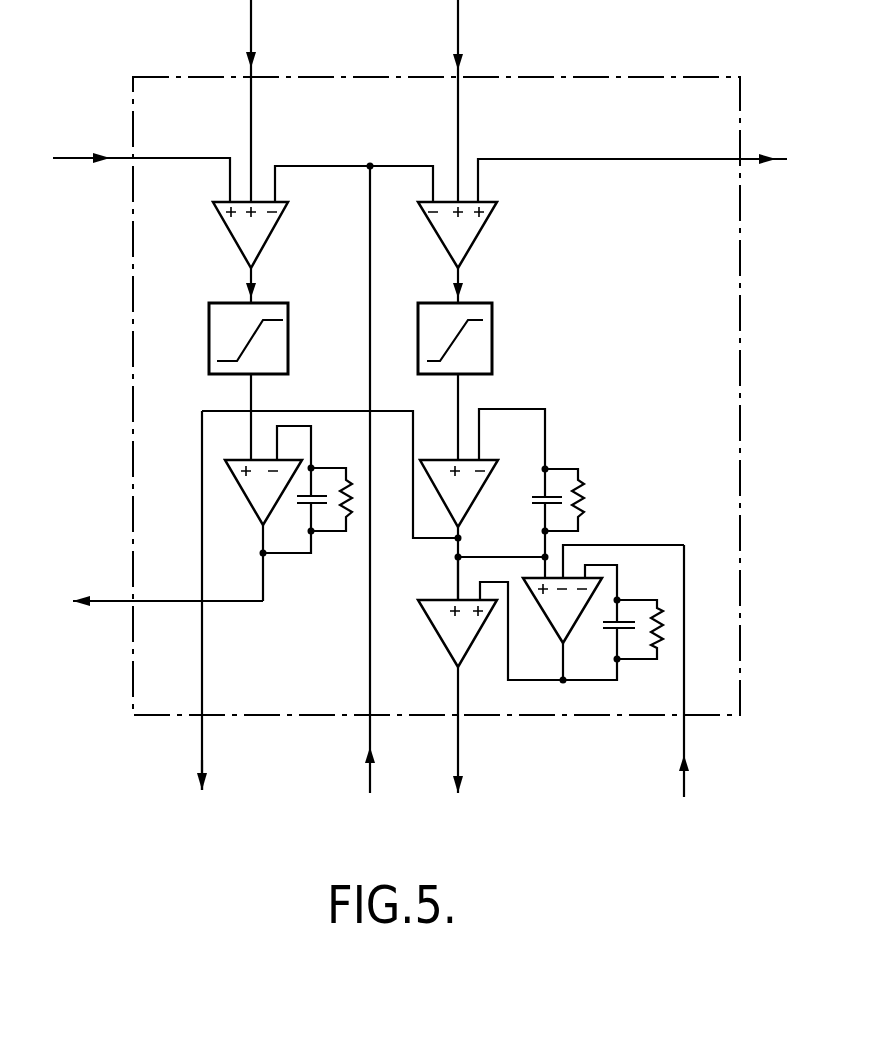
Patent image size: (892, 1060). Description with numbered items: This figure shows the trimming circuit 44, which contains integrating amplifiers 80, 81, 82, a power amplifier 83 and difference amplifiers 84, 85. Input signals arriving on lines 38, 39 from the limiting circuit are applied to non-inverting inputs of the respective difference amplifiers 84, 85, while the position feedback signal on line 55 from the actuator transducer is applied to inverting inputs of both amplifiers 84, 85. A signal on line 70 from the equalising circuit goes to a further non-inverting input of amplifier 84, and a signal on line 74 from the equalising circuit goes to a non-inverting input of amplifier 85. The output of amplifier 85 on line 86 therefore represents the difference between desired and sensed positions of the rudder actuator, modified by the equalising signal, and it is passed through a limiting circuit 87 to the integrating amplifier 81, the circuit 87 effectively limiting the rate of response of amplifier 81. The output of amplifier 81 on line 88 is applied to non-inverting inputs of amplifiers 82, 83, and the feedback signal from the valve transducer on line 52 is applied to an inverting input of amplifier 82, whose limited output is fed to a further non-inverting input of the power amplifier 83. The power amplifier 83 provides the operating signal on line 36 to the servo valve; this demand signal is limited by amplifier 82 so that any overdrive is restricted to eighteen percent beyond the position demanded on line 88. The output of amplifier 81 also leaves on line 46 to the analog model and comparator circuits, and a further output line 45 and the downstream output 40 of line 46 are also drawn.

The line 36 is at (458, 727).
The line 38 is at (253, 33).
The line 39 is at (462, 72).
The output signal 40 is at (202, 793).
The trimming circuit 44 is at (168, 677).
The output signal line 45 is at (110, 603).
The line 46 is at (203, 732).
The line 52 is at (684, 728).
The line 55 is at (370, 728).
The line 70 is at (120, 155).
The line 74 is at (745, 157).
The integrating amplifier 80 is at (255, 493).
The integrating amplifier 81 is at (457, 498).
The integrating amplifier 82 is at (566, 605).
The power amplifier 83 is at (452, 627).
The difference amplifier 84 is at (242, 227).
The difference amplifier 85 is at (455, 230).
The line 86 is at (460, 275).
The limiting circuit 87 is at (470, 350).
The line 88 is at (458, 573).